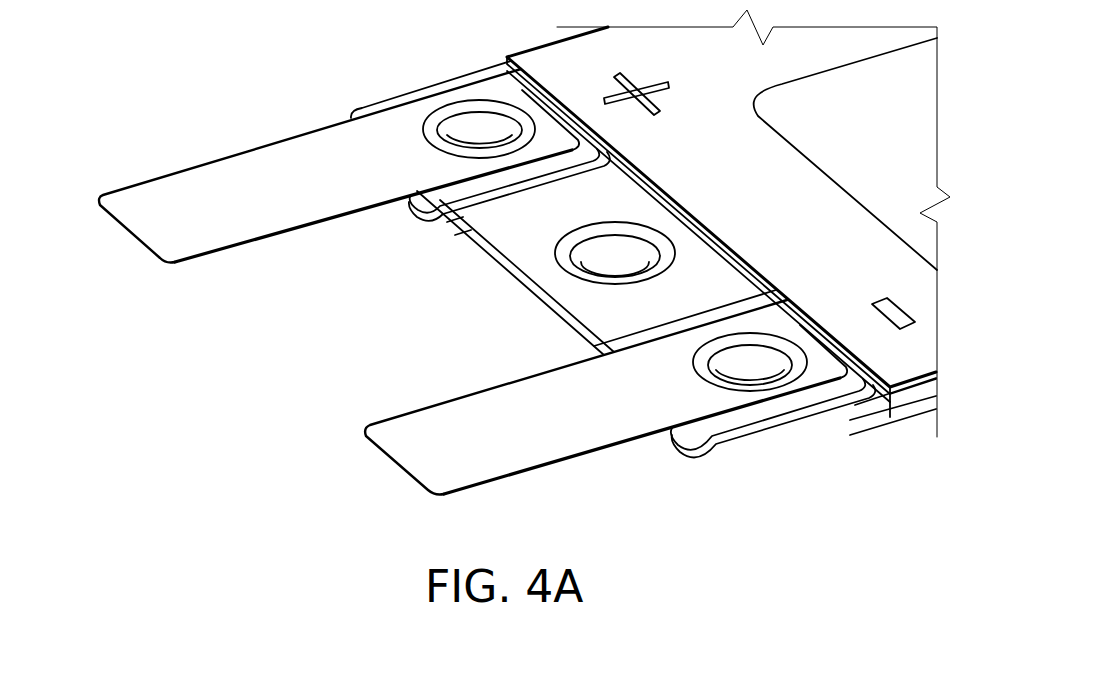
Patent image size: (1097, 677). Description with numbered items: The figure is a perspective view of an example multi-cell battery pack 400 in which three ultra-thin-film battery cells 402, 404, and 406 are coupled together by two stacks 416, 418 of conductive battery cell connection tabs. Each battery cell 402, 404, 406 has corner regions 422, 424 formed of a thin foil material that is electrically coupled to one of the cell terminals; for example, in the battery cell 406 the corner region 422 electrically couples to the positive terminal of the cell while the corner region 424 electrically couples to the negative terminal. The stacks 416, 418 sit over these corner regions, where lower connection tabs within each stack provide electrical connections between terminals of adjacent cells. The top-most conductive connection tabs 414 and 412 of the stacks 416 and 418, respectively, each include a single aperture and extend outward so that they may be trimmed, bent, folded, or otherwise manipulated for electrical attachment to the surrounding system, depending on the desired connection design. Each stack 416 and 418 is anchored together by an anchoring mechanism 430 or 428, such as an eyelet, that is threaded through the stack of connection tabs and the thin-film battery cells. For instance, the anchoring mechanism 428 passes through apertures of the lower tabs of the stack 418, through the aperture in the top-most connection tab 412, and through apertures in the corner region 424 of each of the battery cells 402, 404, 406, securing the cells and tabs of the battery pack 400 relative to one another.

The multi-cell battery pack 400 is at (145, 46).
The ultra-thin-film battery cell 402 is at (588, 363).
The ultra-thin-film battery cell 404 is at (572, 336).
The ultra-thin-film battery cell 406 is at (548, 297).
The top-most conductive connection tab 412 is at (550, 443).
The top-most conductive connection tab 414 is at (283, 208).
The stack of conductive battery cell connection tabs 416 is at (388, 238).
The stack of conductive battery cell connection tabs 418 is at (675, 479).
The corner region 422 is at (448, 88).
The corner region 424 is at (785, 419).
The anchoring mechanism 428 is at (710, 374).
The anchoring mechanism 430 is at (445, 144).